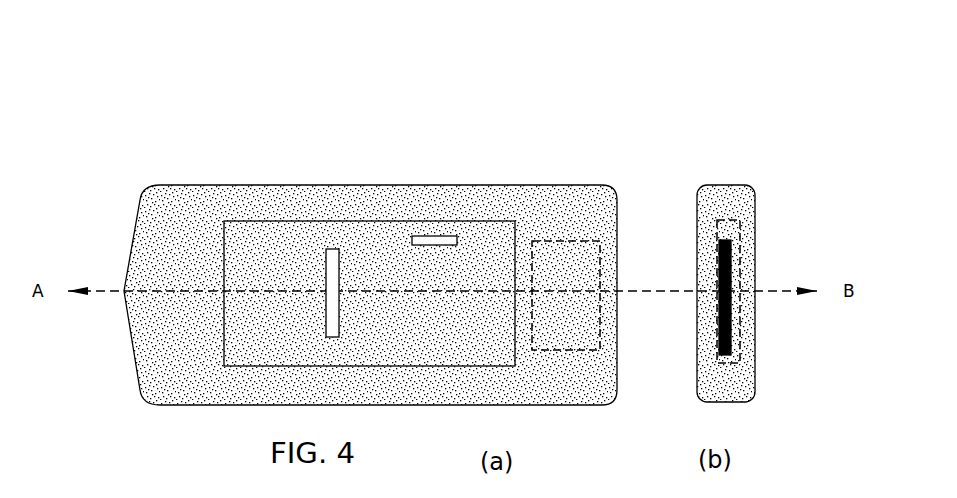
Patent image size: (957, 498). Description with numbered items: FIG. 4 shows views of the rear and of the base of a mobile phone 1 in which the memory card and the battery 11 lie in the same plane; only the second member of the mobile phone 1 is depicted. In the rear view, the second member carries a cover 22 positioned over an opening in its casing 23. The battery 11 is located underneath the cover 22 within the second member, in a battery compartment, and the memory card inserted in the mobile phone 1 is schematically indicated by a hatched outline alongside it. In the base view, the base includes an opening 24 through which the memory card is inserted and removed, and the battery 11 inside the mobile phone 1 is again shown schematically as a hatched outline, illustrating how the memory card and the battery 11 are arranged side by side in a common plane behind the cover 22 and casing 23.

The mobile phone 1 is at (541, 133).
The casing 23 is at (212, 233).
The cover 22 is at (263, 269).
The opening 24 is at (733, 245).
The battery 11 is at (740, 265).